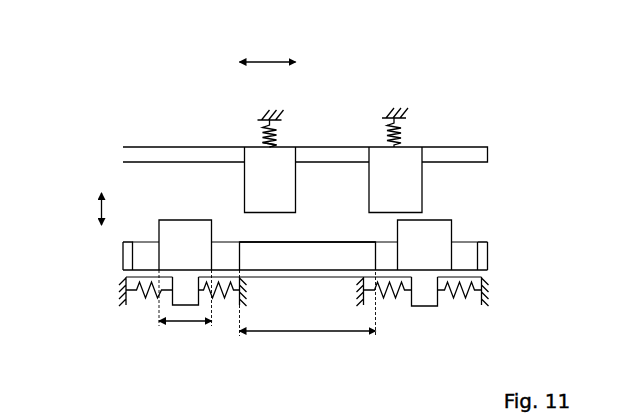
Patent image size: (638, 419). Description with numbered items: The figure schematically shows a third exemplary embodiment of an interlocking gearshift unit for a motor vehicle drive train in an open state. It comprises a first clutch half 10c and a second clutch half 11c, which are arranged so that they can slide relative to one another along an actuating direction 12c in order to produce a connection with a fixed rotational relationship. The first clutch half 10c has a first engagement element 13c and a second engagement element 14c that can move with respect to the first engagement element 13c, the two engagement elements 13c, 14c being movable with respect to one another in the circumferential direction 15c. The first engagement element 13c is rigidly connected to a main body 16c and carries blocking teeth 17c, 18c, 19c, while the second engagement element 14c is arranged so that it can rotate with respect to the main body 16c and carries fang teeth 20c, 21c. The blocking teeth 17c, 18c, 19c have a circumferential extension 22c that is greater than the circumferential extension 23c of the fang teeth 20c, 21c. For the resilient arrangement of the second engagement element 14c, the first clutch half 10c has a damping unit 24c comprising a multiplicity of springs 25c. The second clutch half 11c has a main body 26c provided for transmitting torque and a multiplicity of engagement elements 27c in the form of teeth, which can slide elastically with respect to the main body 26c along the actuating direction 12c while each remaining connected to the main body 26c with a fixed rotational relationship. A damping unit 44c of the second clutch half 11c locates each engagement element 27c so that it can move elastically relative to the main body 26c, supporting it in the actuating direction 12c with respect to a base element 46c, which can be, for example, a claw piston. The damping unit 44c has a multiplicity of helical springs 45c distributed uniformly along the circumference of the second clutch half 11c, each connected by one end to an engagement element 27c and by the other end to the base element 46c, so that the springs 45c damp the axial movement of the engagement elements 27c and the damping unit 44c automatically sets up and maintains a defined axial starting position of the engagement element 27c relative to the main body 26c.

The first clutch half 10c is at (499, 263).
The second clutch half 11c is at (499, 154).
The actuating direction 12c is at (95, 207).
The first engagement element 13c is at (299, 260).
The second engagement element 14c is at (258, 272).
The circumferential direction 15c is at (266, 56).
The main body 16c is at (488, 256).
The blocking tooth 17c is at (353, 239).
The blocking tooth 18c is at (128, 239).
The blocking tooth 19c is at (487, 237).
The fang tooth 20c is at (188, 217).
The fang tooth 21c is at (446, 217).
The circumferential extension 22c is at (348, 333).
The circumferential extension 23c is at (183, 324).
The damping unit 24c is at (109, 295).
The spring 25c is at (140, 288).
The main body 26c is at (434, 158).
The engagement element 27c is at (239, 180).
The damping unit 44c is at (254, 138).
The spring 45c is at (275, 140).
The base element 46c is at (285, 117).